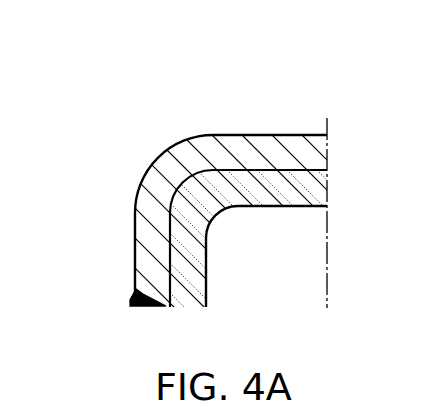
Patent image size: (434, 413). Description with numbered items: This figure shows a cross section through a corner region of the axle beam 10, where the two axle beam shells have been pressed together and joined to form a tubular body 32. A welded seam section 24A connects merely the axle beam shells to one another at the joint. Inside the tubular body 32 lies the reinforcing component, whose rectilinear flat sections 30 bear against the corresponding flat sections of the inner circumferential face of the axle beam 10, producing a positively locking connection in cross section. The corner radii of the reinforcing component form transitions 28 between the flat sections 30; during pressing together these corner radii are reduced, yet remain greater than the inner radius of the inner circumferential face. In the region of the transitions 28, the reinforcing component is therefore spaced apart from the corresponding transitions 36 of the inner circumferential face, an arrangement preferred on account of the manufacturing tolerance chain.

The axle beam 10 is at (329, 70).
The welded seam section 24A is at (133, 262).
The transitions 28 is at (231, 213).
The flat sections 30 is at (207, 255).
The tubular body 32 is at (154, 131).
The transitions of the inner circumferential face 36 is at (143, 162).